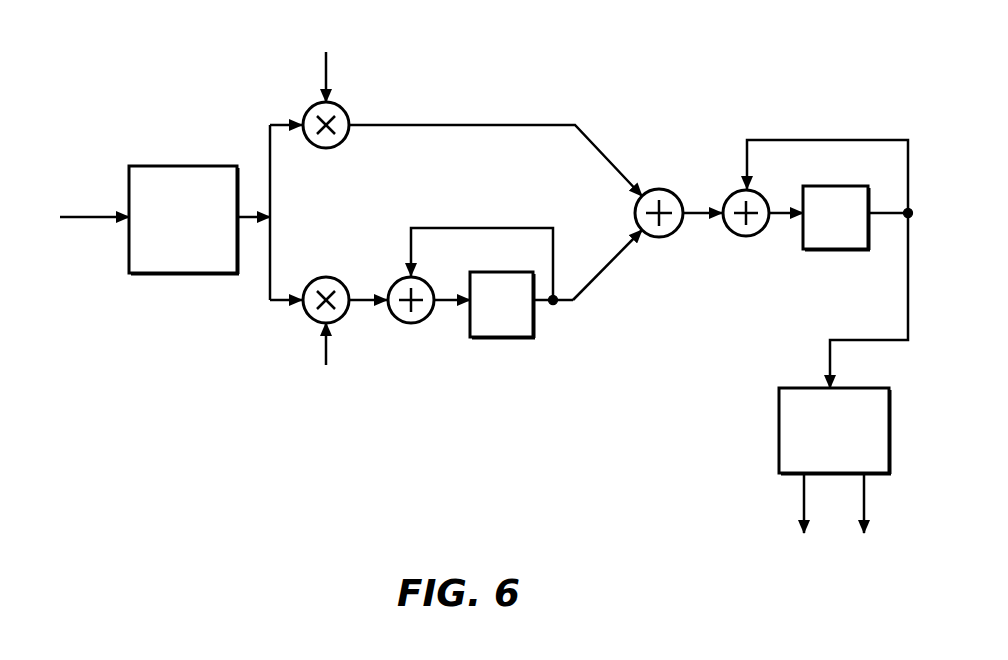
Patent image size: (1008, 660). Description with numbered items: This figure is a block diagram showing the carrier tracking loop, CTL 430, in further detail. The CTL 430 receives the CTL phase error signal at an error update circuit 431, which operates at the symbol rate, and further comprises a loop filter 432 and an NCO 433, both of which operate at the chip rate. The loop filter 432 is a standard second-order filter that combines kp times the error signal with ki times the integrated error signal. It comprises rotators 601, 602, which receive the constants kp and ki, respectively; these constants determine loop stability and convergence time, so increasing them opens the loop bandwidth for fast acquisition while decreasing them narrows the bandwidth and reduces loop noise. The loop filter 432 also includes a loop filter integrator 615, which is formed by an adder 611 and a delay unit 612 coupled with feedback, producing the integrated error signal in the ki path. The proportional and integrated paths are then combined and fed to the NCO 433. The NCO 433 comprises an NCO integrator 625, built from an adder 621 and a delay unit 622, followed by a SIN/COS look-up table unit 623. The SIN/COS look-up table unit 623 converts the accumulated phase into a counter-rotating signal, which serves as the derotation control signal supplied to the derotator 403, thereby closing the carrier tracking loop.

The CTL 430 is at (134, 40).
The error update circuit 431 is at (178, 275).
The loop filter 432 is at (456, 259).
The NCO 433 is at (806, 271).
The rotator 601 is at (343, 108).
The rotator 602 is at (313, 281).
The adder 611 is at (404, 322).
The delay unit 612 is at (513, 325).
The loop filter integrator 615 is at (479, 334).
The adder 621 is at (731, 232).
The delay unit 622 is at (823, 186).
The SIN/COS look-up table (LUT) unit 623 is at (779, 390).
The NCO integrator 625 is at (801, 238).
The derotator 403 is at (833, 540).